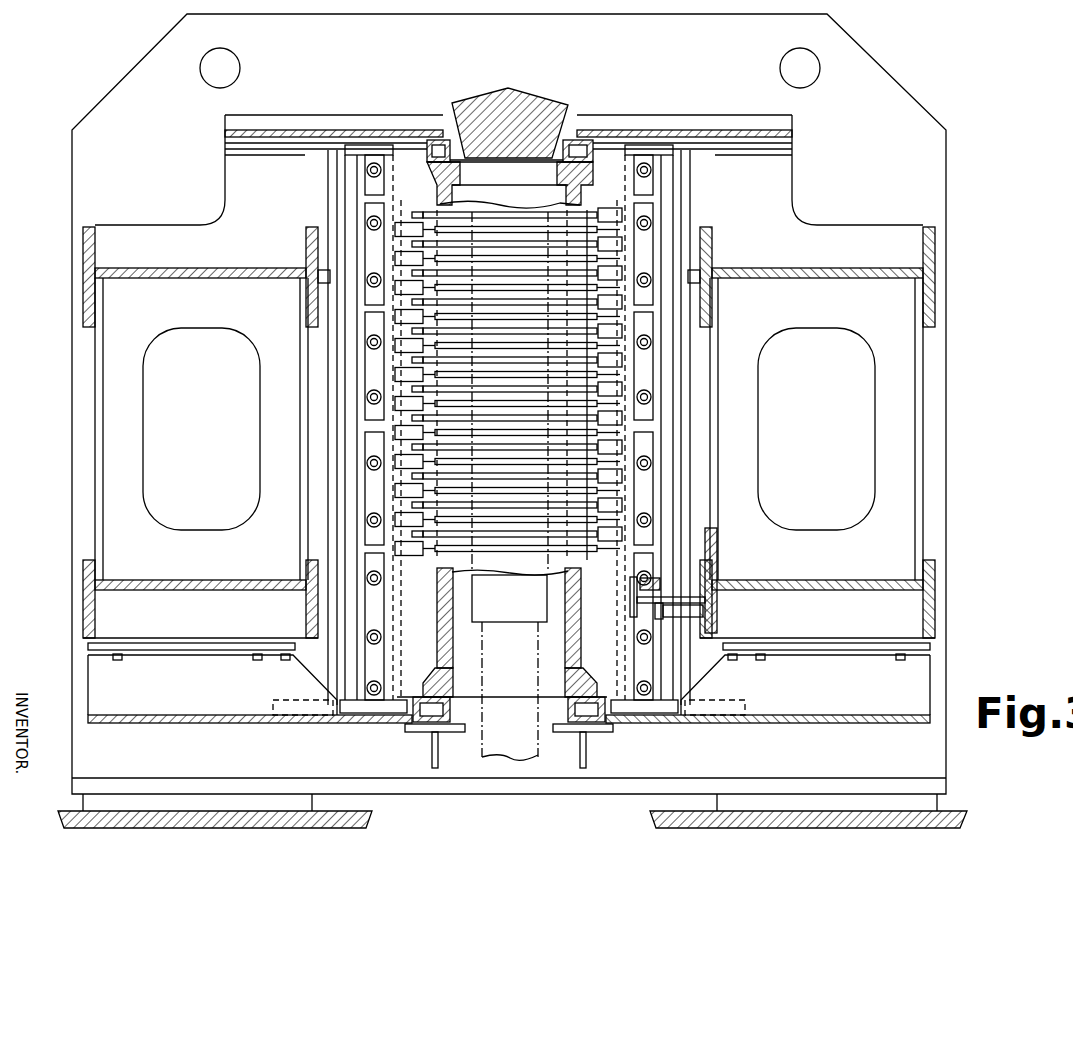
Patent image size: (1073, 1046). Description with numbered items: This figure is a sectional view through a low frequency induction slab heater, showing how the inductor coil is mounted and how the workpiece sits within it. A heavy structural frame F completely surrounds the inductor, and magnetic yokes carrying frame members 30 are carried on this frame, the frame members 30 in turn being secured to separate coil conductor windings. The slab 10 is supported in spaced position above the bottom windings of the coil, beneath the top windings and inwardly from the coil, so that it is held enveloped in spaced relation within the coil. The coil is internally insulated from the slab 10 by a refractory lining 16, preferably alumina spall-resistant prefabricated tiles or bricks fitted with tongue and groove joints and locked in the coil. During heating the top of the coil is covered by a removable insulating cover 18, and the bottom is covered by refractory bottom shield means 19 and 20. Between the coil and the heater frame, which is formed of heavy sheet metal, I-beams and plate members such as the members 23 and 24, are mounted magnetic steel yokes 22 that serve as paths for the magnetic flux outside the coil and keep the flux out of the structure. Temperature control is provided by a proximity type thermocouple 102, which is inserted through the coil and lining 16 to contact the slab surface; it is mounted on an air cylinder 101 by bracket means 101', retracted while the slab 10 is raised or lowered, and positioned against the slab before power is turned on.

The structural frame F is at (916, 67).
The slab 10 is at (508, 612).
The refractory lining 16 is at (450, 660).
The removable insulating cover 18 is at (530, 103).
The refractory bottom shield means 19 is at (230, 714).
The refractory bottom shield means 20 is at (768, 713).
The magnetic steel yoke 22 is at (375, 155).
The I-beam member 23 is at (135, 266).
The plate member 24 is at (110, 385).
The frame member 30 is at (340, 162).
The air cylinder 101 is at (717, 580).
The bracket means 101' is at (709, 580).
The proximity type thermocouple 102 is at (555, 572).